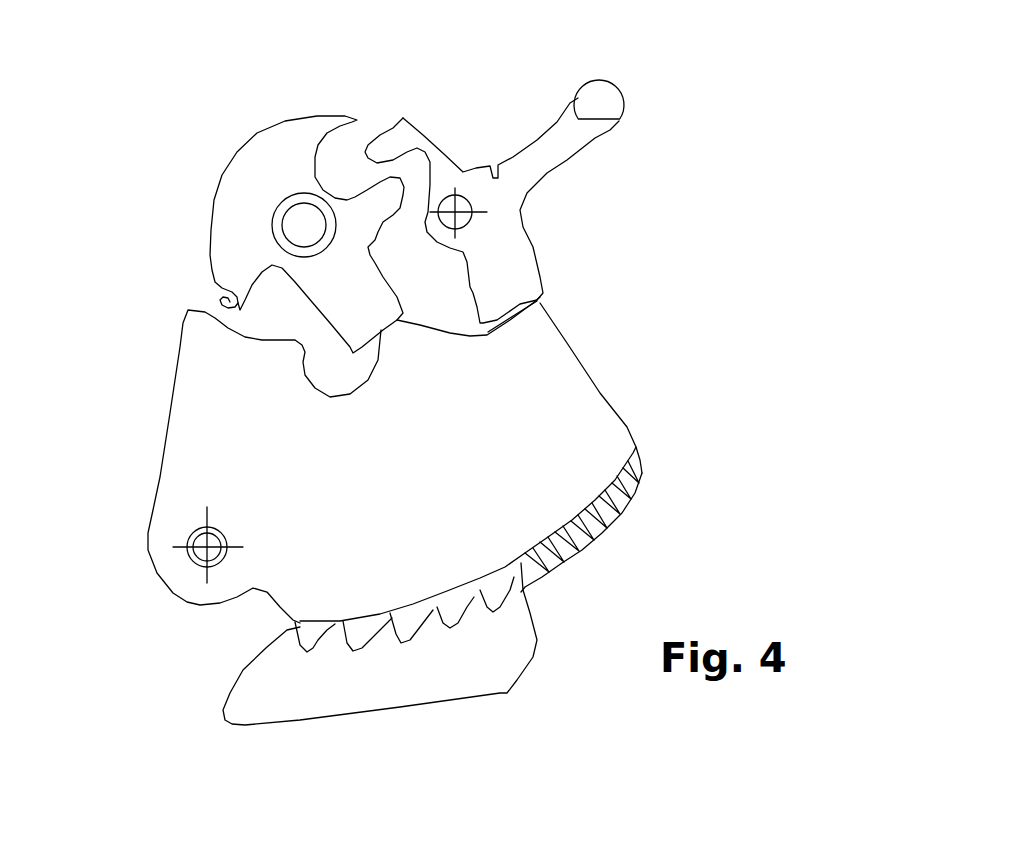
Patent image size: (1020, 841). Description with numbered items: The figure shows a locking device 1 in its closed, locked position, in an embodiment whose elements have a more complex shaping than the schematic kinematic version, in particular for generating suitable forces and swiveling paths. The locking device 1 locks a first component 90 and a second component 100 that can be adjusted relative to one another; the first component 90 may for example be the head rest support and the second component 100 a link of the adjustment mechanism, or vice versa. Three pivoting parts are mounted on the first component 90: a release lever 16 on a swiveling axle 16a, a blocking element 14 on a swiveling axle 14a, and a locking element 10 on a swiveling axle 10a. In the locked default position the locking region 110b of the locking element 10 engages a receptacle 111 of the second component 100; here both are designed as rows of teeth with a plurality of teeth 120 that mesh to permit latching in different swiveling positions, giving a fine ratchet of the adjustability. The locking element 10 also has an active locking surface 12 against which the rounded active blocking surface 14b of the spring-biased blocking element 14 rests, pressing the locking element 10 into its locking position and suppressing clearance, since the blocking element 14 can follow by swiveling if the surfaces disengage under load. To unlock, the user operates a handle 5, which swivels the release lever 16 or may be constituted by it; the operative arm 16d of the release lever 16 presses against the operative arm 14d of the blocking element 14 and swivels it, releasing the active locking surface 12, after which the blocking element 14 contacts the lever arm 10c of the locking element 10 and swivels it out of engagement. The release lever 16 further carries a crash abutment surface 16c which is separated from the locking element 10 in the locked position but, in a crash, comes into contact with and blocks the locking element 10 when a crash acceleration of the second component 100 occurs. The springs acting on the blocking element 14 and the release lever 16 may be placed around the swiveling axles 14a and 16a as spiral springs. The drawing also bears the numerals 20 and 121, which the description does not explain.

The locking device 1 is at (724, 193).
The handle 5 is at (688, 171).
The locking element 10 is at (200, 448).
The swiveling axle 10a is at (207, 548).
The lever arm 10c is at (293, 353).
The active locking surface 12 is at (383, 330).
The blocking element 14 is at (293, 147).
The swiveling axle 14a is at (307, 227).
The active blocking surface 14b is at (380, 337).
The operative arm 14d is at (370, 205).
The release lever 16 is at (540, 150).
The swiveling axle 16a is at (460, 203).
The crash abutment surface 16c is at (540, 300).
The operative arm 16d is at (395, 118).
The pin 20 is at (590, 127).
The first component 90 is at (660, 293).
The second component 100 is at (257, 705).
The locking region 110b is at (463, 570).
The receptacle 111 is at (500, 630).
The teeth 120 is at (275, 645).
The segment body 121 is at (333, 643).